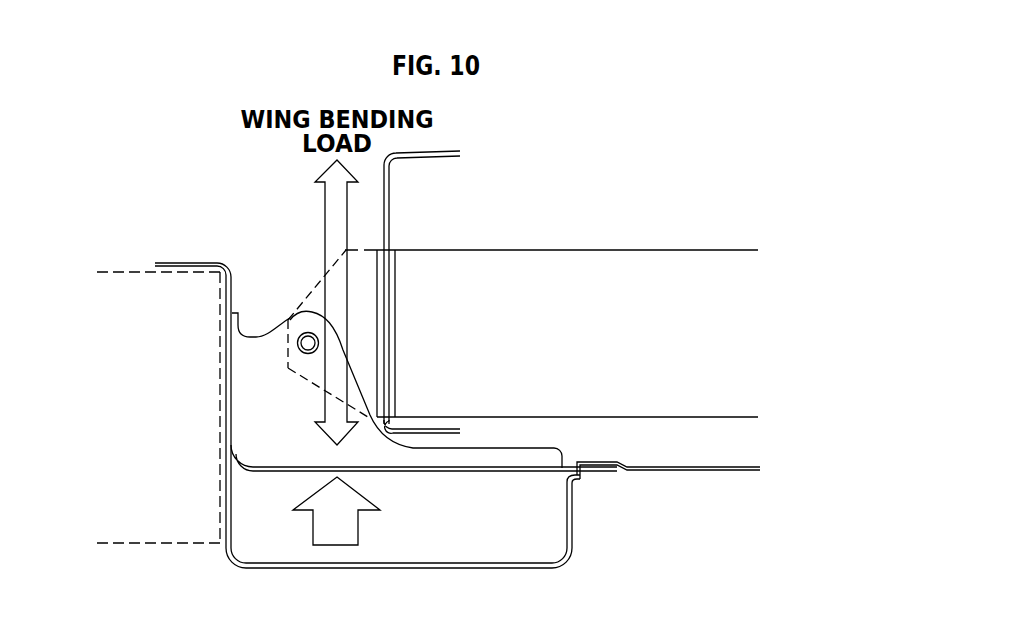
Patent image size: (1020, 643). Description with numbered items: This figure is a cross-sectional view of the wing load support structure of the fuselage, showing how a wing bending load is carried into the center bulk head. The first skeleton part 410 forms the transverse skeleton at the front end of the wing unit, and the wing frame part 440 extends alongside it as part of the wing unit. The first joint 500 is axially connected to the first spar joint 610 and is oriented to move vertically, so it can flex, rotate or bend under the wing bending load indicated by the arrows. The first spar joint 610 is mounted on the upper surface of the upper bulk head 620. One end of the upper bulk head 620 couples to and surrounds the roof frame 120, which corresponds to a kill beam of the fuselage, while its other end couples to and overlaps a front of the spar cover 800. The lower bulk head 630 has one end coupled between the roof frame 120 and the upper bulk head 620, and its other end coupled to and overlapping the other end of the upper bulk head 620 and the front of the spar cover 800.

The roof frame 120 is at (160, 518).
The first skeleton part 410 is at (387, 200).
The wing frame part 440 is at (672, 250).
The first joint 500 is at (360, 290).
The first spar joint 610 is at (262, 340).
The upper bulk head 620 is at (537, 469).
The lower bulk head 630 is at (572, 537).
The spar cover 800 is at (725, 470).